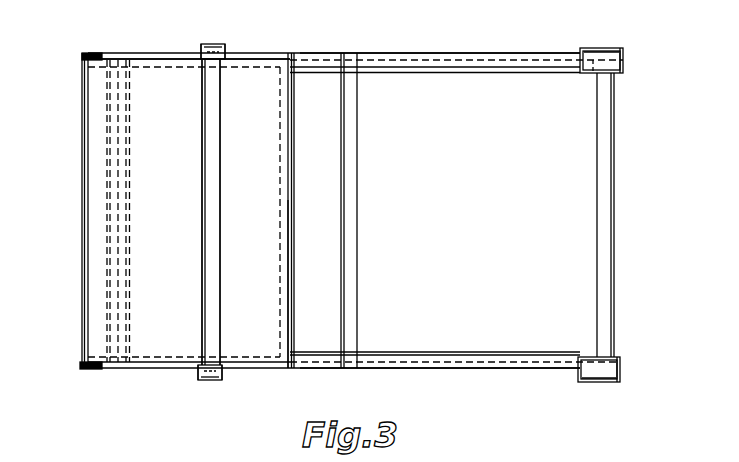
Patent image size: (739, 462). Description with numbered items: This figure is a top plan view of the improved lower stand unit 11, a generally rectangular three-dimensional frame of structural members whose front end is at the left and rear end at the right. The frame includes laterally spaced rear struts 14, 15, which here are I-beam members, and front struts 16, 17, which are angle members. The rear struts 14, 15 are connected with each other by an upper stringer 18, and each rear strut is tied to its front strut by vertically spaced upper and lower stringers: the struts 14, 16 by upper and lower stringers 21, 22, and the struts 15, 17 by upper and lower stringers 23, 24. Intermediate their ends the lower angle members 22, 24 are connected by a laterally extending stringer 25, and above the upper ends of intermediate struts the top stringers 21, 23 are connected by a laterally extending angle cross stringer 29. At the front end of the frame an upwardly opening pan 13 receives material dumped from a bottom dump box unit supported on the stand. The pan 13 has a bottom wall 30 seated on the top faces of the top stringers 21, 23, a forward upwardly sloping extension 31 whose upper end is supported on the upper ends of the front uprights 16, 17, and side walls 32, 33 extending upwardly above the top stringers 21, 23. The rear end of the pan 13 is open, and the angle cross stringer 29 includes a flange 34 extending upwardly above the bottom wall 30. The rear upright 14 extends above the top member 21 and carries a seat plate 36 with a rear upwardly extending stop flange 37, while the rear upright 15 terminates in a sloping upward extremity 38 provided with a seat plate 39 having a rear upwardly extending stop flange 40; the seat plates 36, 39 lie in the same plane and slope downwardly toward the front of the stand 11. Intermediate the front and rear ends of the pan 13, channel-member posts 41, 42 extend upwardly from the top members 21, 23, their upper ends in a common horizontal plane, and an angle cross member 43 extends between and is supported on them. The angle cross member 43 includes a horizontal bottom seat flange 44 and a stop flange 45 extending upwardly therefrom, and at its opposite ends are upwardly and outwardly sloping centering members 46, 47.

The lower stand unit 11 is at (350, 212).
The upwardly opening pan 13 is at (129, 210).
The rear strut 14 is at (622, 375).
The rear strut 15 is at (624, 63).
The front strut 16 is at (80, 365).
The front strut 17 is at (82, 58).
The upper stringer 18 is at (615, 183).
The upper stringer 21 is at (462, 370).
The lower stringer 22 is at (479, 360).
The upper stringer 23 is at (446, 74).
The lower stringer 24 is at (488, 74).
The laterally extending stringer 25 is at (357, 276).
The cross stringer 29 is at (292, 256).
The bottom wall 30 is at (184, 212).
The forward upwardly sloping extension 31 is at (103, 262).
The side wall 32 is at (156, 360).
The side wall 33 is at (166, 64).
The flange 34 is at (292, 308).
The seat plate 36 is at (604, 381).
The stop flange 37 is at (622, 362).
The sloping upward extremity 38 is at (592, 60).
The seat plate 39 is at (604, 52).
The stop flange 40 is at (625, 49).
The post 41 is at (223, 378).
The post 42 is at (226, 52).
The angle cross member 43 is at (202, 180).
The bottom seat flange 44 is at (220, 175).
The stop flange 45 is at (205, 138).
The centering member 46 is at (205, 382).
The centering member 47 is at (213, 45).